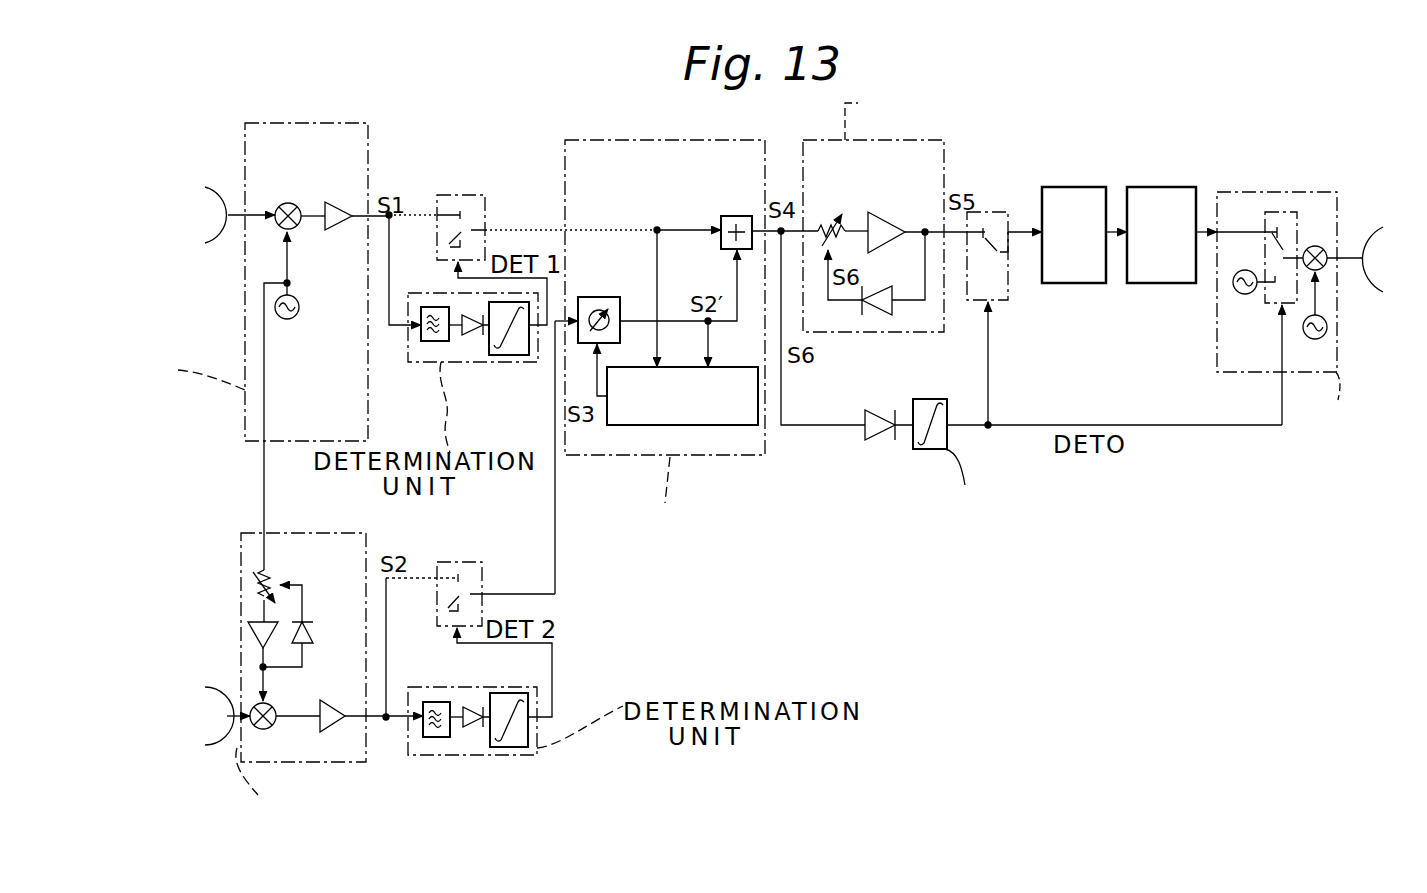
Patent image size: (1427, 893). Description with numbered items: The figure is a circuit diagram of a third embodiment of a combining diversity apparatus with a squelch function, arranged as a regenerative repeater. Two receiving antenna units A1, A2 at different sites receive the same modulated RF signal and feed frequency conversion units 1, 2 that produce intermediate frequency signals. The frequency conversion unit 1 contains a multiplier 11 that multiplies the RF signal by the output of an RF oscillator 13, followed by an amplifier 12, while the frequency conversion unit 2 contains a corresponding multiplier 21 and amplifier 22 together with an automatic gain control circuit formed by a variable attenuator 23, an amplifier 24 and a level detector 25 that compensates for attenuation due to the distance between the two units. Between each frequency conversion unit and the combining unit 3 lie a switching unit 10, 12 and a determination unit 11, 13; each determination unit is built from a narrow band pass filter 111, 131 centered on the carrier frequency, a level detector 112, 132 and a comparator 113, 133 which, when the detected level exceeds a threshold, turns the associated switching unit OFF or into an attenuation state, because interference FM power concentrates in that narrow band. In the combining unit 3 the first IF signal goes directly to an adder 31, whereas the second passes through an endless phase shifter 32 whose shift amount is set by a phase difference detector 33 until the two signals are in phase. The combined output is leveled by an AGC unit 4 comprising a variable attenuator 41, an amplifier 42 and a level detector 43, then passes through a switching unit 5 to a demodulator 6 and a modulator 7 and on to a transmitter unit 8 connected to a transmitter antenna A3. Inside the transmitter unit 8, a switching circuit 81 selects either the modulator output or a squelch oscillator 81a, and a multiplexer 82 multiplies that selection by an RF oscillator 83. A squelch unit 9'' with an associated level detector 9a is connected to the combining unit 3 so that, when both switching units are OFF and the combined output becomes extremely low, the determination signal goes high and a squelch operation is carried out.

The frequency conversion unit 1 is at (352, 123).
The frequency conversion unit 2 is at (340, 533).
The combining unit 3 is at (752, 140).
The AGC unit 4 is at (944, 140).
The switching unit 5 is at (995, 212).
The demodulator 6 is at (1078, 187).
The modulator 7 is at (1163, 187).
The transmitter unit 8 is at (1293, 192).
The switching unit 10 is at (475, 195).
The multiplier / determination unit 11 is at (285, 203).
The amplifier / switching unit 12 is at (340, 200).
The RF oscillator / determination unit 13 is at (298, 303).
The multiplier 21 is at (259, 729).
The amplifier 22 is at (336, 732).
The variable attenuator 23 is at (262, 572).
The amplifier 24 is at (278, 632).
The level detector 25 is at (313, 630).
The adder 31 is at (738, 214).
The endless phase shifter 32 is at (600, 297).
The phase difference detector 33 is at (692, 425).
The variable attenuator 41 is at (830, 212).
The amplifier 42 is at (890, 210).
The level detector 43 is at (880, 286).
The switching circuit 81 is at (1268, 212).
The squelch oscillator 81a is at (1240, 270).
The multiplexer 82 is at (1315, 246).
The RF oscillator 83 is at (1304, 333).
The level detector 9a is at (878, 410).
The squelch unit 9'' is at (1097, 447).
The band pass filter 111 is at (423, 342).
The level detector 112 is at (470, 336).
The comparator 113 is at (515, 355).
The band pass filter 131 is at (428, 702).
The level detector 132 is at (470, 707).
The comparator 133 is at (508, 693).
The receiving antenna unit A1 is at (205, 187).
The receiving antenna unit A2 is at (205, 687).
The transmitter antenna A3 is at (1383, 292).